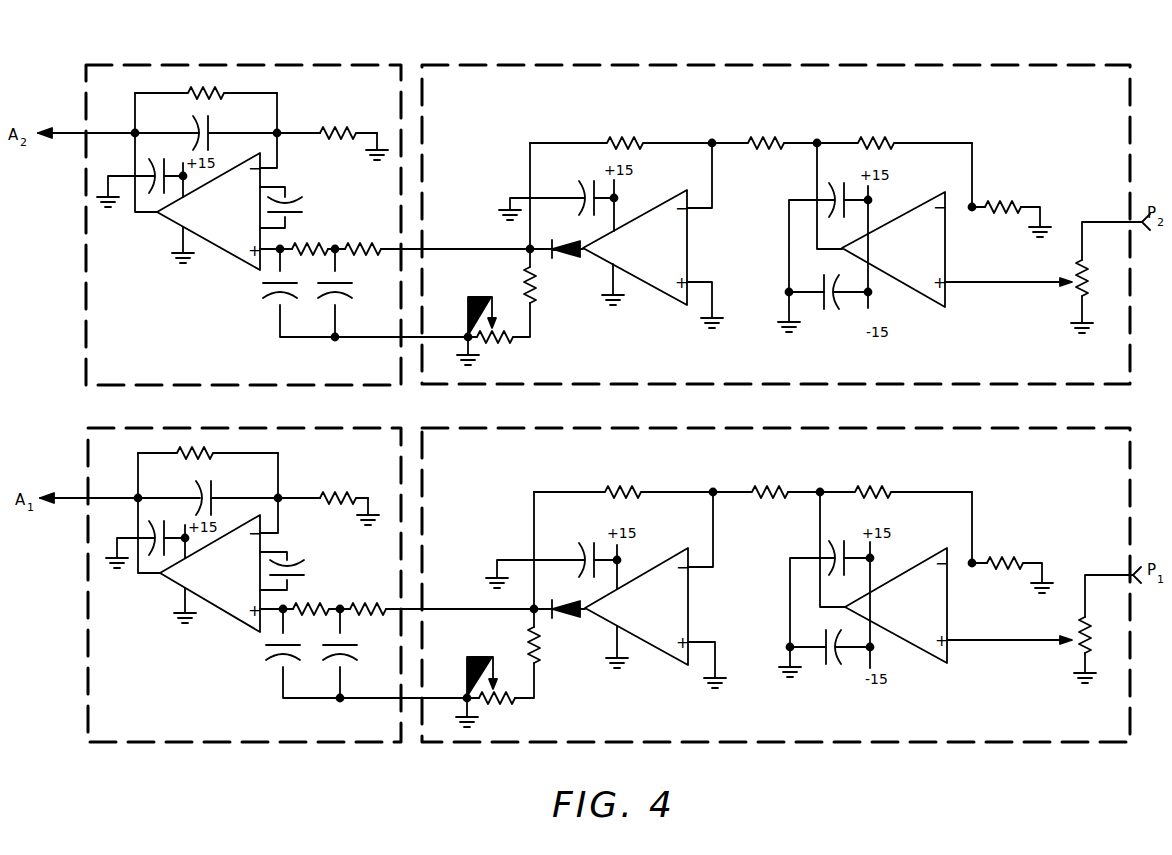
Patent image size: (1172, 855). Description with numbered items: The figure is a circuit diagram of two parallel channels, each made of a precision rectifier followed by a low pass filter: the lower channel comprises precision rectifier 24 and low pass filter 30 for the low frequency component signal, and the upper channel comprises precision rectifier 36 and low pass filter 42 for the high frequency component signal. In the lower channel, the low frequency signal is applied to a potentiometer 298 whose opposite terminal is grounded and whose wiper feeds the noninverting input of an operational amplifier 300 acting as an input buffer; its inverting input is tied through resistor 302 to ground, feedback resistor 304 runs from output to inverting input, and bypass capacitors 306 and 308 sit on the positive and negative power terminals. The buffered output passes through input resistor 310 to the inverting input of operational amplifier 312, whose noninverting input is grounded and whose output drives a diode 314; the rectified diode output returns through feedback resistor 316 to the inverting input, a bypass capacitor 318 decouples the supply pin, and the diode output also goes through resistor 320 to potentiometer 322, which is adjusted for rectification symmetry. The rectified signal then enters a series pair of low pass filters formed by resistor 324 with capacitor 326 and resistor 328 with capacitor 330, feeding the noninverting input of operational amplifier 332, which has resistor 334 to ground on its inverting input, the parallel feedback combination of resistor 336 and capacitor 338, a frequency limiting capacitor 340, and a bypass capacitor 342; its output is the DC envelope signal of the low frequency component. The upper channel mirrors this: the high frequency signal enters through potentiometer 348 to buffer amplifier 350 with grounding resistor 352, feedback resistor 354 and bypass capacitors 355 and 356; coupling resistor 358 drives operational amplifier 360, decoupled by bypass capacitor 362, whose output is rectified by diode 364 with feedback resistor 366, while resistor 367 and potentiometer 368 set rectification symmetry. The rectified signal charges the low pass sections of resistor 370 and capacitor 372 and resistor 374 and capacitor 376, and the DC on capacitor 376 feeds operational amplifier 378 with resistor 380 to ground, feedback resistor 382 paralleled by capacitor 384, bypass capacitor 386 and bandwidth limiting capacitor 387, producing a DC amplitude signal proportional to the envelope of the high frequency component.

The precision rectifier 24 is at (502, 744).
The low pass filter 30 is at (88, 617).
The precision rectifier 36 is at (498, 386).
The low pass filter 42 is at (84, 258).
The potentiometer 298 is at (1076, 647).
The operational amplifier 300 is at (935, 614).
The resistor 302 is at (1007, 561).
The resistor 304 is at (868, 488).
The bypass capacitor 306 is at (842, 543).
The bypass capacitor 308 is at (837, 664).
The input resistor 310 is at (767, 489).
The operational amplifier 312 is at (676, 619).
The diode 314 is at (566, 624).
The feedback resistor 316 is at (625, 490).
The bypass capacitor 318 is at (586, 543).
The resistor 320 is at (528, 637).
The potentiometer 322 is at (496, 702).
The resistor 324 is at (370, 601).
The capacitor 326 is at (346, 662).
The resistor 328 is at (318, 598).
The capacitor 330 is at (282, 664).
The operational amplifier 332 is at (247, 582).
The resistor 334 is at (352, 490).
The resistor 336 is at (208, 452).
The capacitor 338 is at (215, 491).
The capacitor 340 is at (294, 564).
The bypass capacitor 342 is at (152, 536).
The potentiometer 348 is at (1078, 290).
The operational amplifier 350 is at (928, 256).
The resistor 352 is at (1005, 203).
The feedback resistor 354 is at (879, 137).
The bypass capacitor 355 is at (843, 184).
The bypass capacitor 356 is at (832, 307).
The coupling resistor 358 is at (766, 135).
The operational amplifier 360 is at (670, 254).
The bypass capacitor 362 is at (586, 183).
The diode 364 is at (558, 256).
The feedback resistor 366 is at (627, 137).
The resistor 367 is at (524, 275).
The potentiometer 368 is at (498, 342).
The resistor 370 is at (369, 241).
The capacitor 372 is at (342, 300).
The resistor 374 is at (313, 241).
The capacitor 376 is at (271, 298).
The operational amplifier 378 is at (244, 219).
The resistor 380 is at (341, 127).
The resistor 382 is at (216, 90).
The capacitor 384 is at (213, 128).
The bypass capacitor 386 is at (150, 170).
The bandwidth limiting capacitor 387 is at (301, 199).